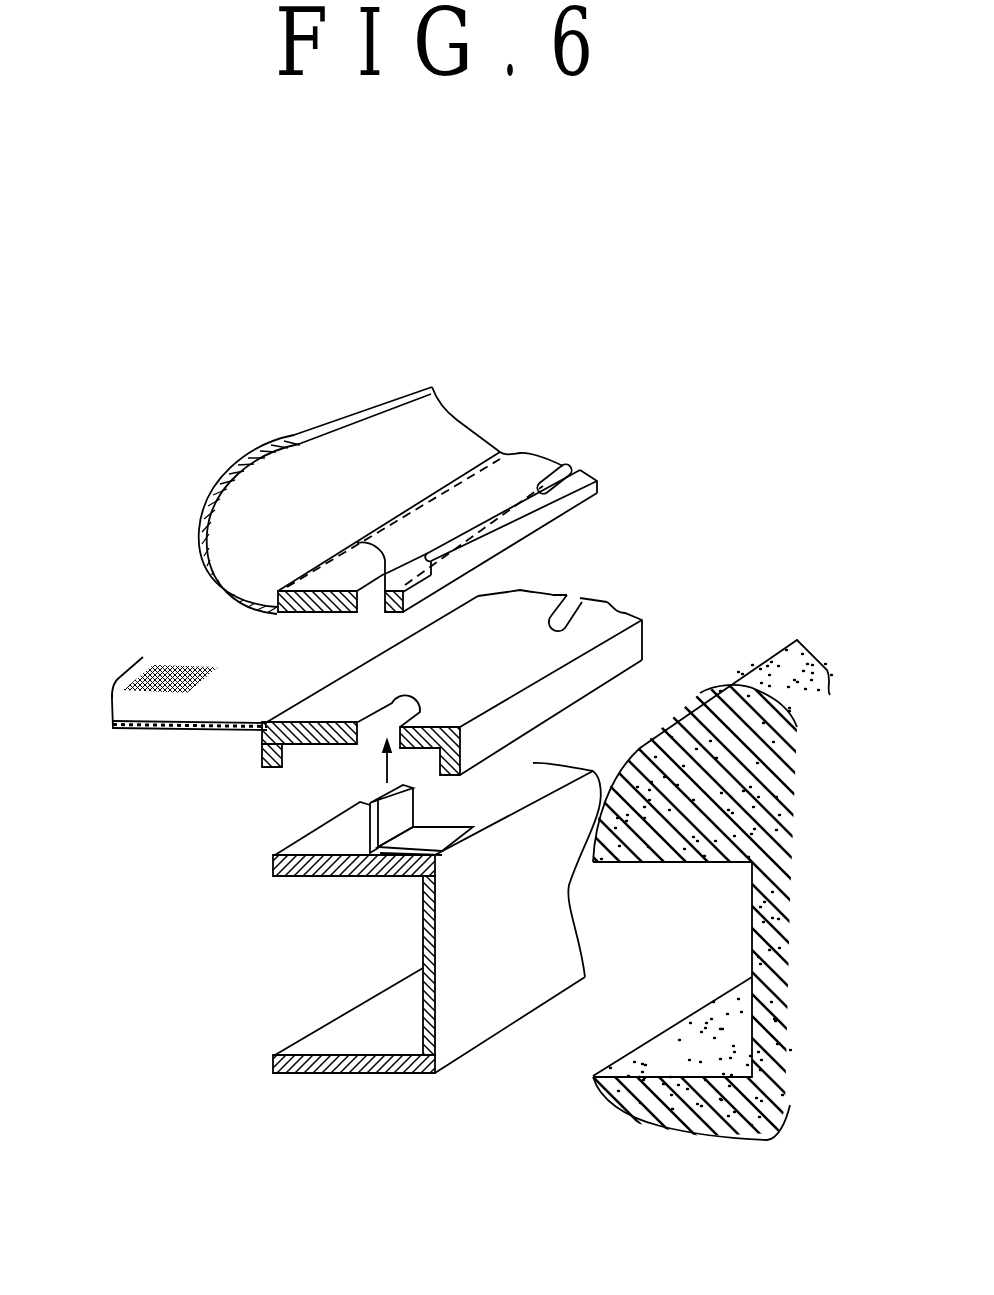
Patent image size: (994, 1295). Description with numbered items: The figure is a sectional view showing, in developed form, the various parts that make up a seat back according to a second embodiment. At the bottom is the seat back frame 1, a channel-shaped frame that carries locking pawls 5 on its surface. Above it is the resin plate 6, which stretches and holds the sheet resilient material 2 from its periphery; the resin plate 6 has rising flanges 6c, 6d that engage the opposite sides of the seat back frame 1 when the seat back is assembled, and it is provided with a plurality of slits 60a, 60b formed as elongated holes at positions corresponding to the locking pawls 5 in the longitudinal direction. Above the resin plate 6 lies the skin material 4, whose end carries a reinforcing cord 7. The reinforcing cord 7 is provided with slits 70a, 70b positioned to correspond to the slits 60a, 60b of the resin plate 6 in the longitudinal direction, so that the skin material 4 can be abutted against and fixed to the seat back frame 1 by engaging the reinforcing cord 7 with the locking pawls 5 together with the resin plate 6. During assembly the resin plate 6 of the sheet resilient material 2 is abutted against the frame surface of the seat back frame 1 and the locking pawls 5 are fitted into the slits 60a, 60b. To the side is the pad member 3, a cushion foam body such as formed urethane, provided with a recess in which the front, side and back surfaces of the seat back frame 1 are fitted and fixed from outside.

The seat back frame 1 is at (467, 1023).
The sheet resilient material 2 is at (130, 677).
The pad member 3 is at (753, 667).
The skin material 4 is at (330, 417).
The locking pawls 5 is at (358, 840).
The resin plate 6 is at (334, 678).
The rising flange 6c is at (262, 752).
The rising flange 6d is at (640, 640).
The reinforcing cord 7 is at (520, 453).
The slit 60a is at (373, 748).
The slit 60b is at (568, 597).
The slit 70a is at (357, 543).
The slit 70b is at (553, 470).